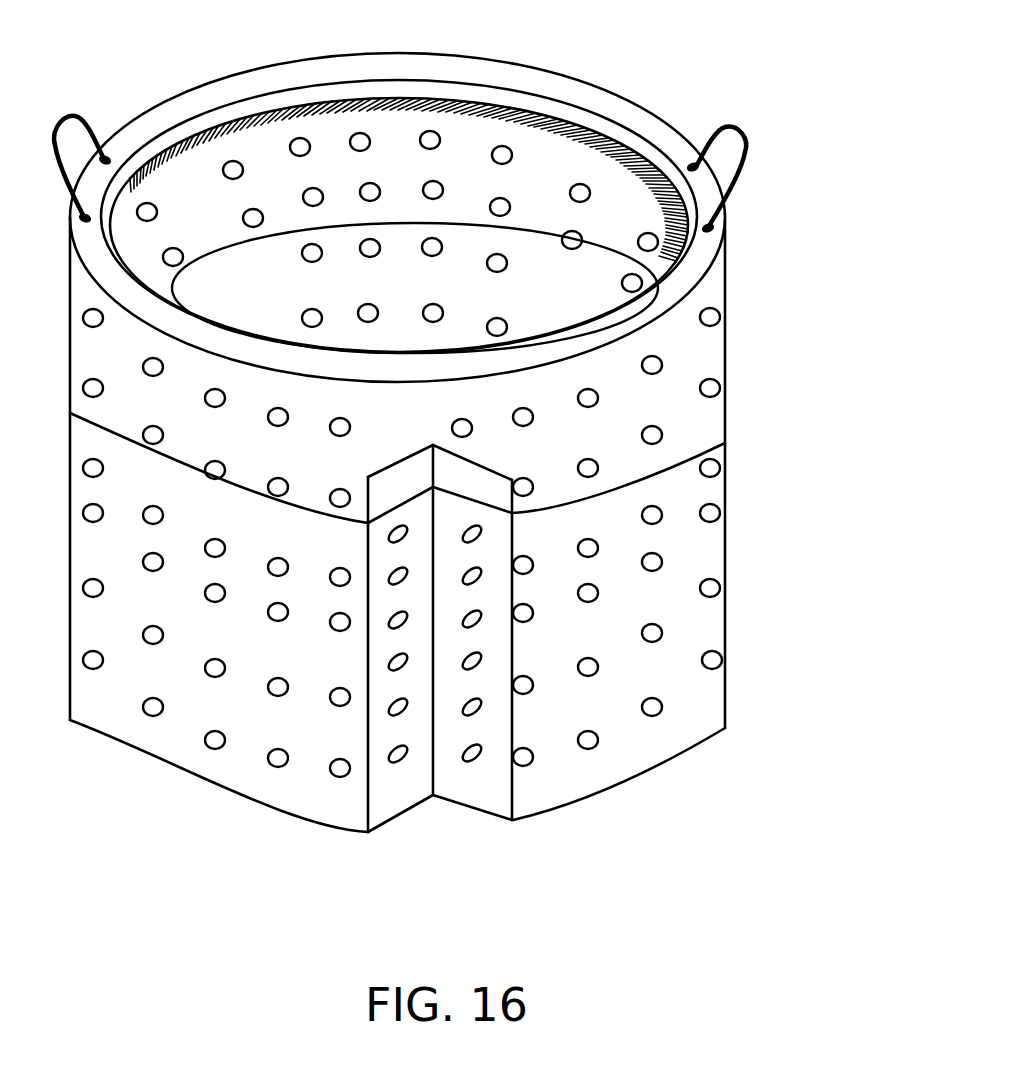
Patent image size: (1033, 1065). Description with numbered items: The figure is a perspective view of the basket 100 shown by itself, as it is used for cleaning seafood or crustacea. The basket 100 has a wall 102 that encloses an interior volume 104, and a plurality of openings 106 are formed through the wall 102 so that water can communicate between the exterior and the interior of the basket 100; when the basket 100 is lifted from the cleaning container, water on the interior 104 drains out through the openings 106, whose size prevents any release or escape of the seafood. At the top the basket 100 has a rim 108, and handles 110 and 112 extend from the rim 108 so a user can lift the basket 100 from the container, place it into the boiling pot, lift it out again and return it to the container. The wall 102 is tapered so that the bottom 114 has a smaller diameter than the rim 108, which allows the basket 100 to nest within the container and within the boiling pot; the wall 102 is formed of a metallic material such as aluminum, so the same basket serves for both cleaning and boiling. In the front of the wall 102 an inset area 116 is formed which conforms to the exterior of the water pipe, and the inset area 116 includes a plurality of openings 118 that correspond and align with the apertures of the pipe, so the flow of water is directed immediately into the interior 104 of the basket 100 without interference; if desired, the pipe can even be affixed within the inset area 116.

The basket 100 is at (790, 405).
The wall 102 is at (705, 557).
The interior volume 104 is at (405, 143).
The openings 106 is at (714, 306).
The rim 108 is at (563, 192).
The handle 110 is at (748, 152).
The handle 112 is at (103, 157).
The bottom 114 is at (657, 768).
The inset area 116 is at (433, 824).
The openings 118 is at (396, 765).